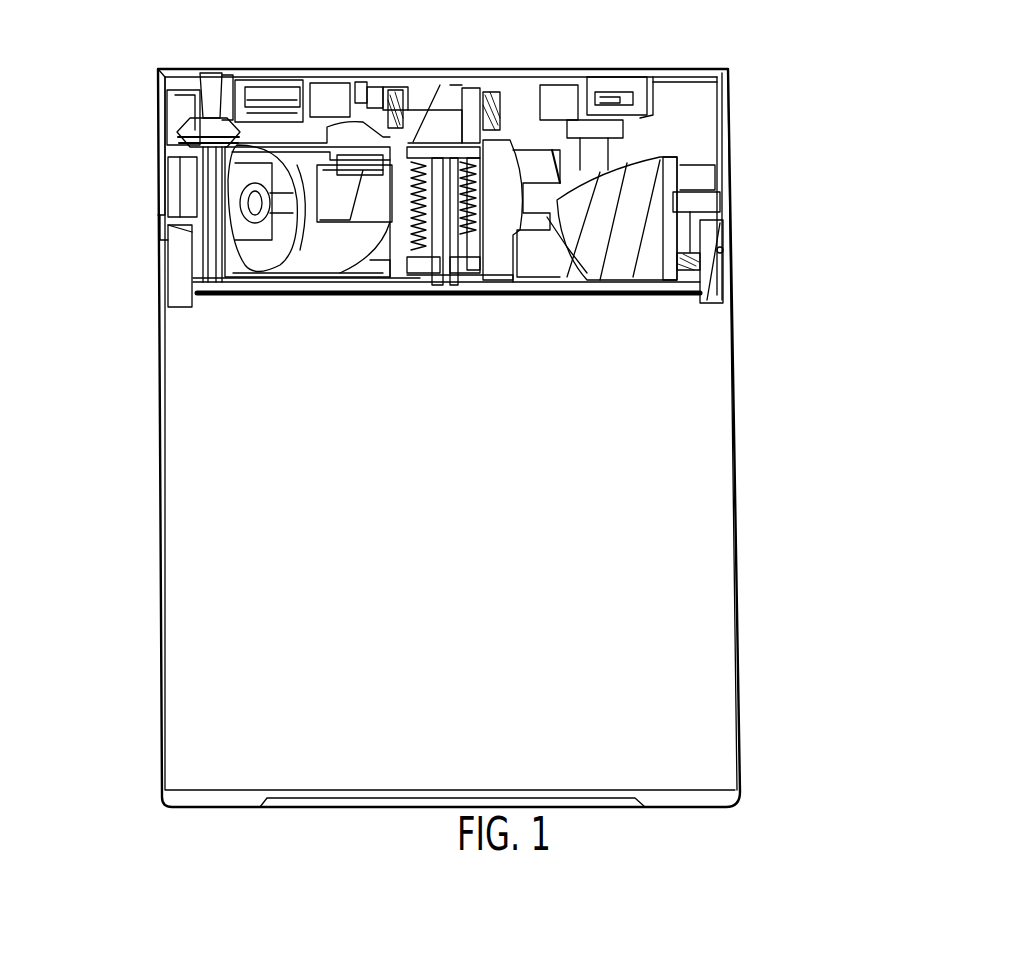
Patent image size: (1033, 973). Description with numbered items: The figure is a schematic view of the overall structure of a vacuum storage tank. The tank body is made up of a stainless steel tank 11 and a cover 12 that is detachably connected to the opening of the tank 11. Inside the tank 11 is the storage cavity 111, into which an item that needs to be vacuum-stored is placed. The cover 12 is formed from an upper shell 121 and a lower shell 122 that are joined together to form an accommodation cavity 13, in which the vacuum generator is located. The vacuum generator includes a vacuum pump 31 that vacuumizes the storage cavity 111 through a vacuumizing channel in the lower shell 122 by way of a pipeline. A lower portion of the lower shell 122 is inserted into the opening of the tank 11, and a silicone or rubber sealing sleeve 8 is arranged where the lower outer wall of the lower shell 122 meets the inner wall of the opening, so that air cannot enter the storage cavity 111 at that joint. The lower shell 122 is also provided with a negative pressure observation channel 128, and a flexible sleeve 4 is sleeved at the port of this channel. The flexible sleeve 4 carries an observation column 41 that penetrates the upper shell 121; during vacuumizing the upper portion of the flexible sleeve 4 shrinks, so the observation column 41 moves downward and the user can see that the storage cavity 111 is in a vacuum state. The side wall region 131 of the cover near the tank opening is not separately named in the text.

The tank 11 is at (740, 383).
The storage cavity 111 is at (462, 556).
The cover 12 is at (866, 127).
The upper shell 121 is at (723, 180).
The lower shell 122 is at (690, 240).
The accommodation cavity 13 is at (653, 132).
The cover side wall 131 is at (160, 68).
The flexible sleeve 4 is at (183, 133).
The observation column 41 is at (250, 70).
The negative pressure observation channel 128 is at (187, 180).
The vacuum pump 31 is at (313, 246).
The rubber sealing sleeve 8 is at (710, 273).